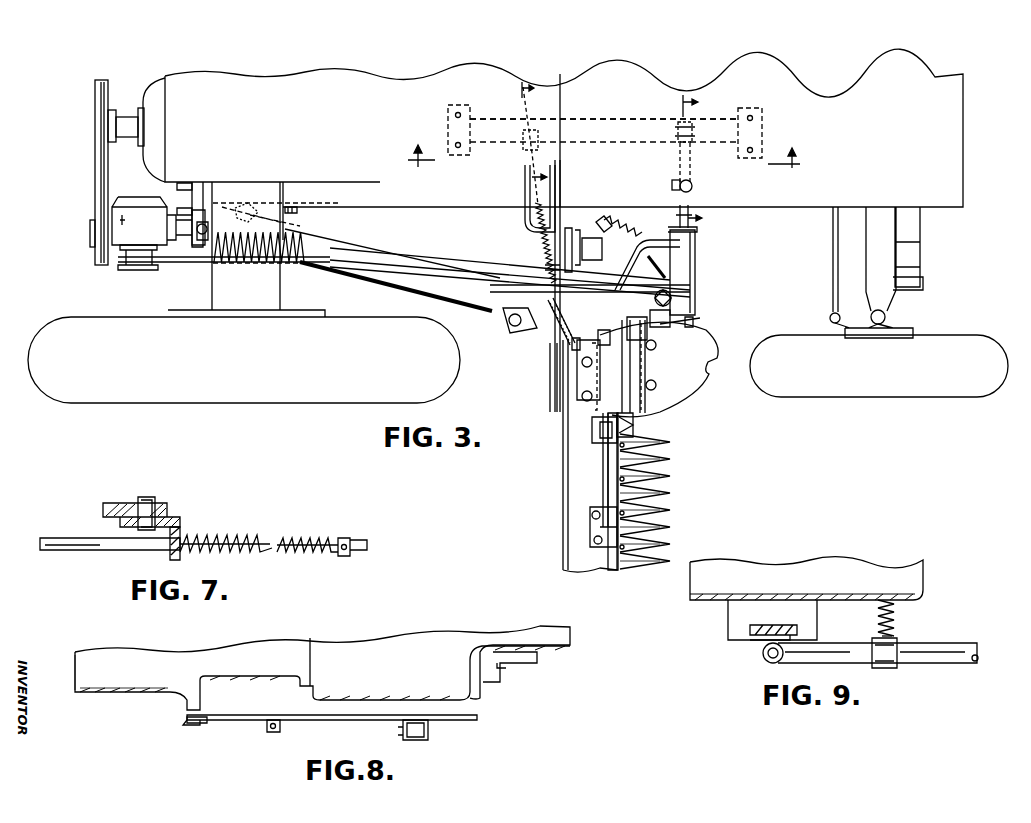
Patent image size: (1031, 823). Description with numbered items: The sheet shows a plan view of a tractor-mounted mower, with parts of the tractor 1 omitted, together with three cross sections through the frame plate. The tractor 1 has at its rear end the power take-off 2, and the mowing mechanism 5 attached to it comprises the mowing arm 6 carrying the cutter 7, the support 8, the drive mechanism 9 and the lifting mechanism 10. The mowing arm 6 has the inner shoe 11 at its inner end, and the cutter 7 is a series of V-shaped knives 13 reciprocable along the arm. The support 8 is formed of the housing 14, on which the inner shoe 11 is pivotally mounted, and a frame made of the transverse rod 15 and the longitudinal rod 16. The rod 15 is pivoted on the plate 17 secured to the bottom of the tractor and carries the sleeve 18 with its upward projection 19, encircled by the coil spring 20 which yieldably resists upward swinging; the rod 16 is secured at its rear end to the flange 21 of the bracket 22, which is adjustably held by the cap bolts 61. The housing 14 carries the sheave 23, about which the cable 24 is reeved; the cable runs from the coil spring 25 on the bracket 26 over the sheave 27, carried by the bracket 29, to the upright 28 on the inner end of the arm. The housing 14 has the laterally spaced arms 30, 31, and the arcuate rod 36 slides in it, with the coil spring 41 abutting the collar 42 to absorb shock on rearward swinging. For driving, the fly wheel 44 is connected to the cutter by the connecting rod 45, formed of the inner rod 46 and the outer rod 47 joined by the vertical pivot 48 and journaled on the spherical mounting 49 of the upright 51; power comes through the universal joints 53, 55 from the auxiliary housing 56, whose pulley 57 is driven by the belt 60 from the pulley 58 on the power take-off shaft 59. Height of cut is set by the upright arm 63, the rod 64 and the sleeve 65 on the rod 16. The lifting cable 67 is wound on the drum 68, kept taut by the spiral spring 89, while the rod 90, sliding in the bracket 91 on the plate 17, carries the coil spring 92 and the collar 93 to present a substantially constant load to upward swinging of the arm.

In FIG. 3, the tractor 1 is at (972, 167).
In FIG. 3, the power take-off 2 is at (126, 106).
In FIG. 3, the mowing mechanism 5 is at (522, 358).
In FIG. 3, the mowing arm 6 is at (558, 535).
In FIG. 3, the cutter 7 is at (662, 421).
In FIG. 3, the support 8 is at (718, 262).
In FIG. 3, the drive mechanism 9 is at (478, 343).
In FIG. 3, the lifting mechanism 10 is at (165, 263).
In FIG. 3, the inner shoe 11 is at (695, 350).
In FIG. 3, the V-shaped knives 13 is at (634, 530).
In FIG. 3, the housing 14 is at (672, 245).
In FIG. 3, the rod 15 is at (680, 218).
In FIG. 8, the rod 15 is at (418, 742).
In FIG. 9, the rod 15 is at (932, 660).
In FIG. 3, the rod 16 is at (425, 286).
In FIG. 3, the plate 17 is at (588, 130).
In FIG. 7, the plate 17 is at (120, 502).
In FIG. 8, the plate 17 is at (343, 715).
In FIG. 9, the plate 17 is at (750, 633).
In FIG. 3, the sleeve 18 is at (694, 183).
In FIG. 9, the sleeve 18 is at (893, 645).
In FIG. 9, the projection 19 is at (893, 640).
In FIG. 9, the coil spring 20 is at (877, 616).
In FIG. 3, the flange 21 is at (252, 207).
In FIG. 3, the bracket 22 is at (298, 212).
In FIG. 3, the sheave 23 is at (572, 286).
In FIG. 3, the cable 24 is at (414, 266).
In FIG. 3, the coil spring 25 is at (300, 262).
In FIG. 3, the bracket 26 is at (195, 198).
In FIG. 3, the sheave 27 is at (548, 266).
In FIG. 3, the upright 28 is at (590, 400).
In FIG. 3, the bracket 29 is at (567, 225).
In FIG. 3, the arm 30 is at (546, 332).
In FIG. 3, the arm 31 is at (560, 342).
In FIG. 3, the arcuate rod 36 is at (683, 270).
In FIG. 3, the coil spring 41 is at (622, 226).
In FIG. 3, the collar 42 is at (606, 218).
In FIG. 3, the fly wheel 44 is at (580, 360).
In FIG. 3, the connecting rod 45 is at (620, 380).
In FIG. 3, the inner rod 46 is at (683, 332).
In FIG. 3, the outer rod 47 is at (640, 395).
In FIG. 3, the vertical pivot 48 is at (593, 420).
In FIG. 3, the spherical mounting 49 is at (606, 432).
In FIG. 3, the upright 51 is at (604, 425).
In FIG. 3, the universal joint 53 is at (514, 330).
In FIG. 3, the universal joint 55 is at (205, 243).
In FIG. 3, the auxiliary housing 56 is at (146, 205).
In FIG. 3, the pulley 57 is at (92, 216).
In FIG. 3, the pulley 58 is at (96, 122).
In FIG. 3, the power take-off shaft 59 is at (128, 122).
In FIG. 3, the belt 60 is at (96, 182).
In FIG. 3, the cap bolts 61 is at (298, 203).
In FIG. 3, the upright arm 63 is at (675, 293).
In FIG. 3, the rod 64 is at (647, 265).
In FIG. 3, the sleeve 65 is at (467, 288).
In FIG. 3, the cable 67 is at (366, 272).
In FIG. 3, the drum 68 is at (126, 272).
In FIG. 3, the spiral spring 89 is at (140, 227).
In FIG. 3, the rod 90 is at (570, 352).
In FIG. 7, the rod 90 is at (350, 540).
In FIG. 8, the rod 90 is at (272, 735).
In FIG. 3, the bracket 91 is at (524, 148).
In FIG. 7, the bracket 91 is at (180, 527).
In FIG. 8, the bracket 91 is at (266, 722).
In FIG. 3, the coil spring 92 is at (530, 240).
In FIG. 7, the coil spring 92 is at (255, 536).
In FIG. 3, the collar 93 is at (520, 370).
In FIG. 7, the collar 93 is at (345, 557).